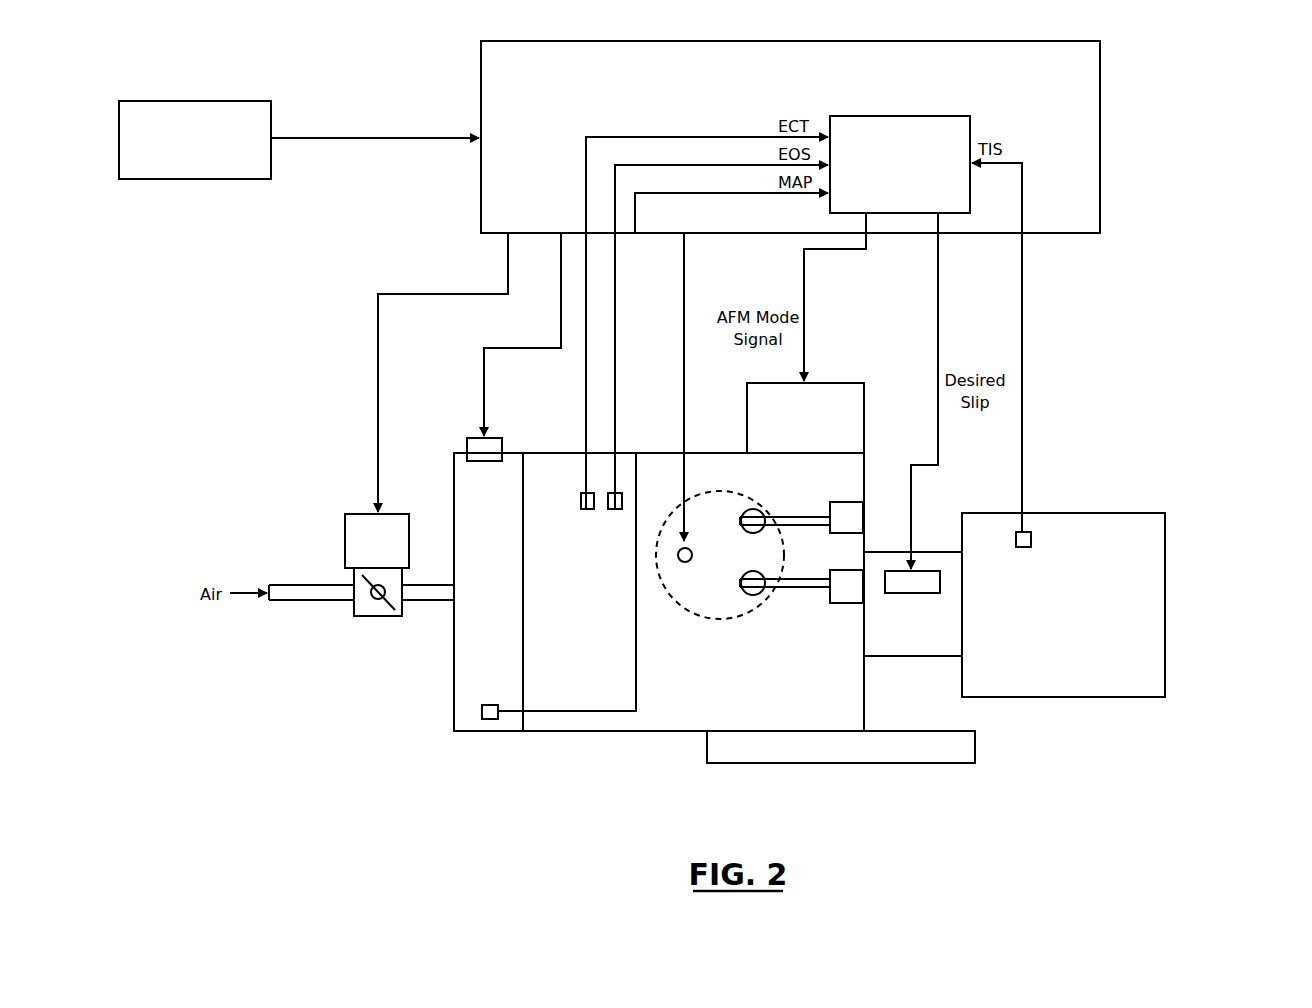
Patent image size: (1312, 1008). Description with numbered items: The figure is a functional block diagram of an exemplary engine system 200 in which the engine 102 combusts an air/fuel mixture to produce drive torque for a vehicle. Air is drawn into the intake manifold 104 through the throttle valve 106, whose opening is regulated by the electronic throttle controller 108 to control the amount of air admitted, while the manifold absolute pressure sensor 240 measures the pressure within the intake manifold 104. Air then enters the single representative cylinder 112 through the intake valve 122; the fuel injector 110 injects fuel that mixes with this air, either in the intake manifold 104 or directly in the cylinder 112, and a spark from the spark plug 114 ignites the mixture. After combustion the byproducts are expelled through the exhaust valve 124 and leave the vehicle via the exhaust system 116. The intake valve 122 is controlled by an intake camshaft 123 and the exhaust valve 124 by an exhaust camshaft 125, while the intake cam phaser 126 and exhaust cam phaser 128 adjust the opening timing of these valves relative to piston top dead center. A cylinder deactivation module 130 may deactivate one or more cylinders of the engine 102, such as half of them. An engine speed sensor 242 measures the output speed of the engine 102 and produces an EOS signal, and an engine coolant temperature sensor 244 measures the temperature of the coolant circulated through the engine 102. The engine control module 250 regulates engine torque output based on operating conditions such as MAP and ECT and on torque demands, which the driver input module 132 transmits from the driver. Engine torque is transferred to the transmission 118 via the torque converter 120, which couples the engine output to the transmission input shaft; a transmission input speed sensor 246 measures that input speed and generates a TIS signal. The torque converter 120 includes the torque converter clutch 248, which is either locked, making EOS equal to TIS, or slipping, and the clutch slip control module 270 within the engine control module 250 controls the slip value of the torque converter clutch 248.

The engine system 200 is at (1182, 84).
The driver input module 132 is at (197, 101).
The engine control module 250 is at (481, 88).
The clutch slip control module 270 is at (900, 116).
The cylinder deactivation module 130 is at (865, 416).
The engine 102 is at (633, 731).
The intake manifold 104 is at (454, 688).
The fuel injector 110 is at (491, 437).
The electronic throttle controller 108 is at (361, 514).
The throttle valve 106 is at (376, 616).
The engine coolant temperature sensor 244 is at (586, 510).
The engine speed sensor 242 is at (615, 510).
The cylinder 112 is at (720, 619).
The spark plug 114 is at (685, 562).
The intake valve 122 is at (758, 509).
The intake camshaft 123 is at (795, 516).
The intake cam phaser 126 is at (862, 500).
The exhaust valve 124 is at (753, 596).
The exhaust camshaft 125 is at (806, 588).
The exhaust cam phaser 128 is at (850, 604).
The torque converter 120 is at (924, 552).
The torque converter clutch 248 is at (911, 593).
The transmission 118 is at (1065, 513).
The transmission input speed sensor 246 is at (1023, 548).
The exhaust system 116 is at (836, 763).
The manifold absolute pressure sensor 240 is at (490, 720).